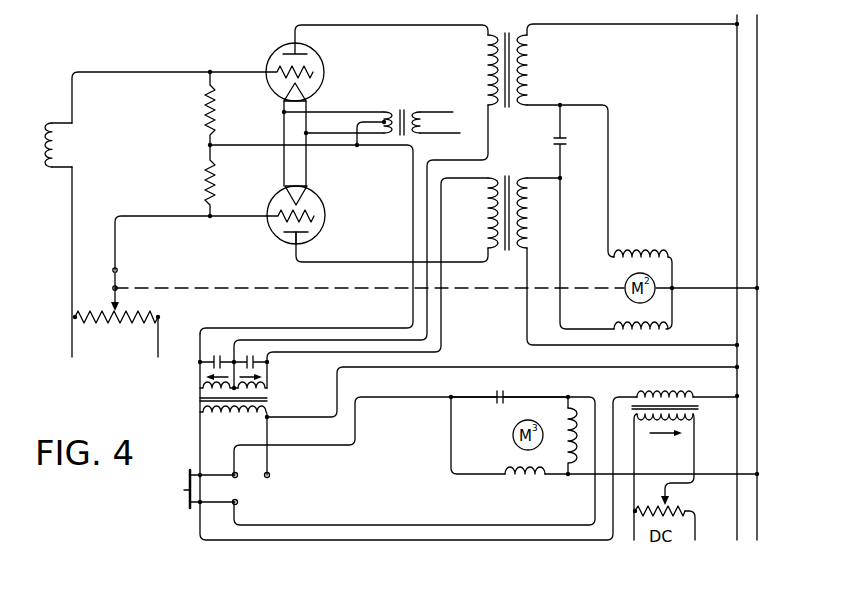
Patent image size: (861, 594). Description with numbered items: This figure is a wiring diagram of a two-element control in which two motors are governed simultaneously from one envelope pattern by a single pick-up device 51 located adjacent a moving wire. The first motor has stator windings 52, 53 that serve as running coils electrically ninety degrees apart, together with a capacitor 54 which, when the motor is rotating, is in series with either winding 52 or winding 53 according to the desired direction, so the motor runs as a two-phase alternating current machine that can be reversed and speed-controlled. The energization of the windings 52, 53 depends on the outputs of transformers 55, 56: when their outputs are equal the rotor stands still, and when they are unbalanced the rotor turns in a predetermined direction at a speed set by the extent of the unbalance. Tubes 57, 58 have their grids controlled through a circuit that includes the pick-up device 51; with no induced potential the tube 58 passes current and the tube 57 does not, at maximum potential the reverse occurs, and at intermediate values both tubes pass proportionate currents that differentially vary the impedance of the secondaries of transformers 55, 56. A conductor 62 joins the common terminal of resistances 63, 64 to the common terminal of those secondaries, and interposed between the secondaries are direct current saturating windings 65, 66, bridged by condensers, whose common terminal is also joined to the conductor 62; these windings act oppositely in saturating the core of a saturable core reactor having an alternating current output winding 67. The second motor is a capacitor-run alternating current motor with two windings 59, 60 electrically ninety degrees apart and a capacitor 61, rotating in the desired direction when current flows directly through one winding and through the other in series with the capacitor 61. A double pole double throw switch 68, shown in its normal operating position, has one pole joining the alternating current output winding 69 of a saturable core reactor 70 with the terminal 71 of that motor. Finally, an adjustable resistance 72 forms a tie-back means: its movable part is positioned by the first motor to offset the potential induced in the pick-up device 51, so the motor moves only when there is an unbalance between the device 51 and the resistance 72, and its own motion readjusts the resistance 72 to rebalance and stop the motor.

The pick-up device 51 is at (46, 145).
The stator winding 52 is at (641, 242).
The stator winding 53 is at (641, 336).
The capacitor 54 is at (546, 141).
The transformer 55 is at (520, 213).
The transformer 56 is at (491, 70).
The tube 57 is at (322, 208).
The tube 58 is at (321, 56).
The winding 59 is at (583, 441).
The winding 60 is at (525, 484).
The capacitor 61 is at (509, 387).
The conductor 62 is at (237, 145).
The resistance 63 is at (194, 108).
The resistance 64 is at (194, 180).
The direct current saturating winding 65 is at (200, 389).
The direct current saturating winding 66 is at (266, 392).
The A.-C. output winding 67 is at (252, 412).
The double pole double throw switch 68 is at (184, 513).
The alternating current output winding 69 is at (665, 384).
The saturable core reactor 70 is at (724, 423).
The terminal 71 is at (569, 396).
The adjustable resistance 72 is at (116, 304).